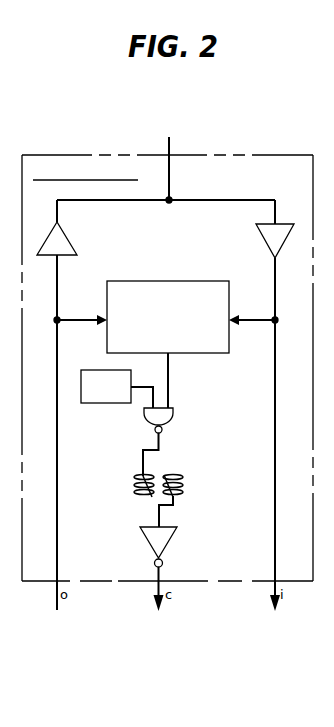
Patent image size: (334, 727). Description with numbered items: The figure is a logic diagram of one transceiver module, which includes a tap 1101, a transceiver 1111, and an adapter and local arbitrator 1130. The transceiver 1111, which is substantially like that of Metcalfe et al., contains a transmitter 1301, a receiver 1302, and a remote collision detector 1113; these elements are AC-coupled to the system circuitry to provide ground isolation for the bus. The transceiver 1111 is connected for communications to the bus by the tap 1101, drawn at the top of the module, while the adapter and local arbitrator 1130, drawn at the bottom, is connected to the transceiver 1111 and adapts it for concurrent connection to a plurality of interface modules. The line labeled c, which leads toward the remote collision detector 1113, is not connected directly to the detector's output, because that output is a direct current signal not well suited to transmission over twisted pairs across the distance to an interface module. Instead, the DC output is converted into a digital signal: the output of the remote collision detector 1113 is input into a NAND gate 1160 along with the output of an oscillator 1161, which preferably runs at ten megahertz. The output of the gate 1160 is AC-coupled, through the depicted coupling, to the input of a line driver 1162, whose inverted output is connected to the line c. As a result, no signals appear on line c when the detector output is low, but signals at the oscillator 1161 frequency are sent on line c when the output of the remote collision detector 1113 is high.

The tap 1101 is at (210, 136).
The transceiver 1111 is at (67, 154).
The transmitter 1301 is at (67, 244).
The receiver 1302 is at (263, 243).
The remote collision detector 1113 is at (146, 281).
The oscillator 1161 is at (127, 404).
The NAND gate 1160 is at (173, 413).
The line driver 1162 is at (168, 540).
The adapter and local arbitrator 1130 is at (291, 612).